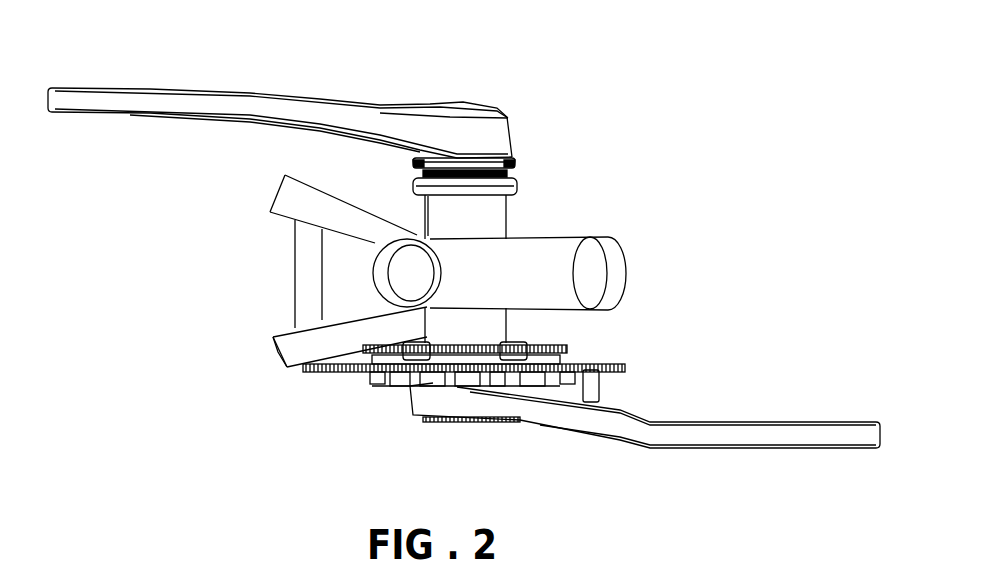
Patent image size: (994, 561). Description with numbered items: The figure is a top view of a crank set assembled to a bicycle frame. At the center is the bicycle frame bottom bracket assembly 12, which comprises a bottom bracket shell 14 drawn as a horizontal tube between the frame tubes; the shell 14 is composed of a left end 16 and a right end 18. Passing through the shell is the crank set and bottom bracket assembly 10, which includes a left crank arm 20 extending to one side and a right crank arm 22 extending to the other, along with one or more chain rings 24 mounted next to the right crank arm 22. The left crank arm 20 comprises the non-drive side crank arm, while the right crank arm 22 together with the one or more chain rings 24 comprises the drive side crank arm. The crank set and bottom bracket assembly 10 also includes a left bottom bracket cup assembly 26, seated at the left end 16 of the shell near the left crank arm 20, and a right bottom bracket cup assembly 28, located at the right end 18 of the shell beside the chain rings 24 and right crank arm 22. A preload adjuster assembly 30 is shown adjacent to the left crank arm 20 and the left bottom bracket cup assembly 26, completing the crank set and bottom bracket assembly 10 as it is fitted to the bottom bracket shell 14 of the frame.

The crank set and bottom bracket assembly 10 is at (836, 415).
The bicycle frame bottom bracket assembly 12 is at (617, 276).
The bottom bracket shell 14 is at (472, 228).
The left end 16 is at (508, 202).
The right end 18 is at (508, 337).
The left crank arm 20 is at (133, 102).
The right crank arm 22 is at (750, 435).
The chain rings 24 is at (345, 367).
The left bottom bracket cup assembly 26 is at (415, 188).
The right bottom bracket cup assembly 28 is at (450, 383).
The preload adjuster assembly 30 is at (517, 160).